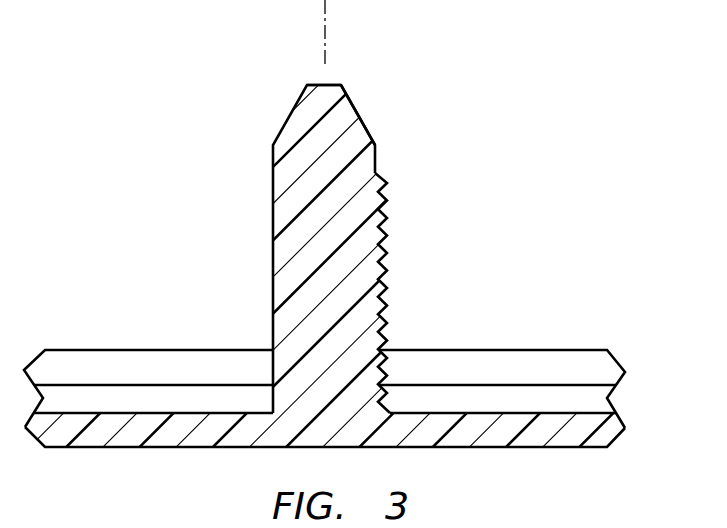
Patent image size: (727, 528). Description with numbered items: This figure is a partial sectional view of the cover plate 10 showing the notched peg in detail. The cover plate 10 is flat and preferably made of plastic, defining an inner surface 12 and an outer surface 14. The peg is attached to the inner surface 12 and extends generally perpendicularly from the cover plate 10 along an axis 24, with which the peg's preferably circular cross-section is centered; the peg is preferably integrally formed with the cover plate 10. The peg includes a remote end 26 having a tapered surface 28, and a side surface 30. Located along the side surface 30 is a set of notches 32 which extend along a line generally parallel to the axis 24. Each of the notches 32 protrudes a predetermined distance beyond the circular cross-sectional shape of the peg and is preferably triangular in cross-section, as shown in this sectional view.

The cover plate 10 is at (566, 136).
The inner surface 12 is at (551, 413).
The outer surface 14 is at (527, 448).
The axis 24 is at (326, 8).
The remote end 26 is at (324, 83).
The tapered surface 28 is at (355, 108).
The side surface 30 is at (272, 256).
The notches 32 is at (385, 264).